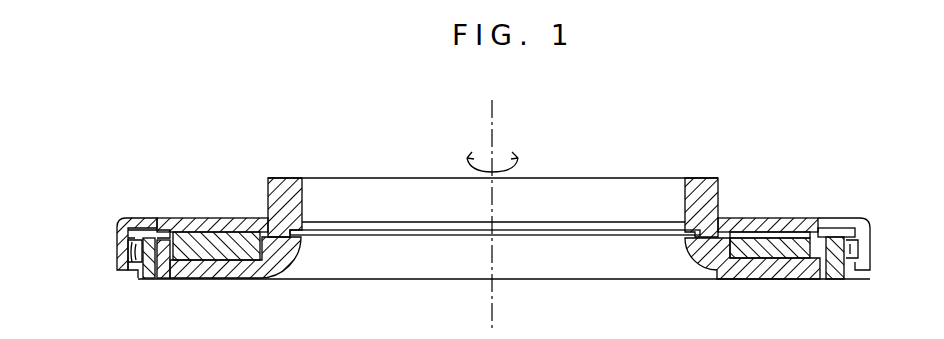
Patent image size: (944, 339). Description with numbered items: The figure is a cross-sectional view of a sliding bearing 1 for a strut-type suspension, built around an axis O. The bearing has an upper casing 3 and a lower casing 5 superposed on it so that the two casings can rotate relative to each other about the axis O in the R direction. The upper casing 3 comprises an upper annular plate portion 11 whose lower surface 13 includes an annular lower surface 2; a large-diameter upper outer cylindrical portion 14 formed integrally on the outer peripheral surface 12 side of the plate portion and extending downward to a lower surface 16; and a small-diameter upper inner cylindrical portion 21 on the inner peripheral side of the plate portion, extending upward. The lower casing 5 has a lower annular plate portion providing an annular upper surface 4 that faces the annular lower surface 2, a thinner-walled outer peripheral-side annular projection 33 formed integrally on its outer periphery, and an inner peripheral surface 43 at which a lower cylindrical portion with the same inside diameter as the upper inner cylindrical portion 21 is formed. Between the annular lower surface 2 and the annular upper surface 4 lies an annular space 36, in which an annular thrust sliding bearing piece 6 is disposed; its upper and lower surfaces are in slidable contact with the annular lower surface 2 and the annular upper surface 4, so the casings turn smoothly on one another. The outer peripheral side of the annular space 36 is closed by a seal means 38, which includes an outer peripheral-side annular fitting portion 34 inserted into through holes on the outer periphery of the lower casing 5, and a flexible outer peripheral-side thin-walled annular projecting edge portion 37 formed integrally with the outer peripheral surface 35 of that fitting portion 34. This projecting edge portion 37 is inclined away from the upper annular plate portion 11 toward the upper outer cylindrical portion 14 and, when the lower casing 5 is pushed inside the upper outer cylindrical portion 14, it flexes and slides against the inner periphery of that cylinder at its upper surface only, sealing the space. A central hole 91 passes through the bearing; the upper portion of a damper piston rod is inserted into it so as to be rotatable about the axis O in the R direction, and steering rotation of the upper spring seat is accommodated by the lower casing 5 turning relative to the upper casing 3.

The sliding bearing 1 is at (253, 170).
The annular lower surface 2 is at (765, 232).
The upper casing 3 is at (720, 180).
The annular upper surface 4 is at (770, 260).
The lower casing 5 is at (712, 280).
The thrust sliding bearing piece 6 is at (800, 238).
The upper annular plate portion 11 is at (226, 220).
The outer peripheral surface 12 is at (117, 226).
The lower surface 13 is at (143, 232).
The upper outer cylindrical portion 14 is at (124, 252).
The lower surface 16 is at (122, 270).
The upper inner cylindrical portion 21 is at (286, 178).
The outer peripheral-side annular projection 33 is at (149, 279).
The outer peripheral-side annular fitting portion 34 is at (162, 279).
The outer peripheral surface 35 is at (858, 272).
The annular space 36 is at (835, 228).
The outer peripheral-side thin-walled annular projecting edge portion 37 is at (133, 262).
The seal means 38 is at (822, 280).
The inner peripheral surface 43 is at (298, 258).
The central hole 91 is at (546, 272).
The axis O is at (497, 128).
The R direction R is at (520, 160).